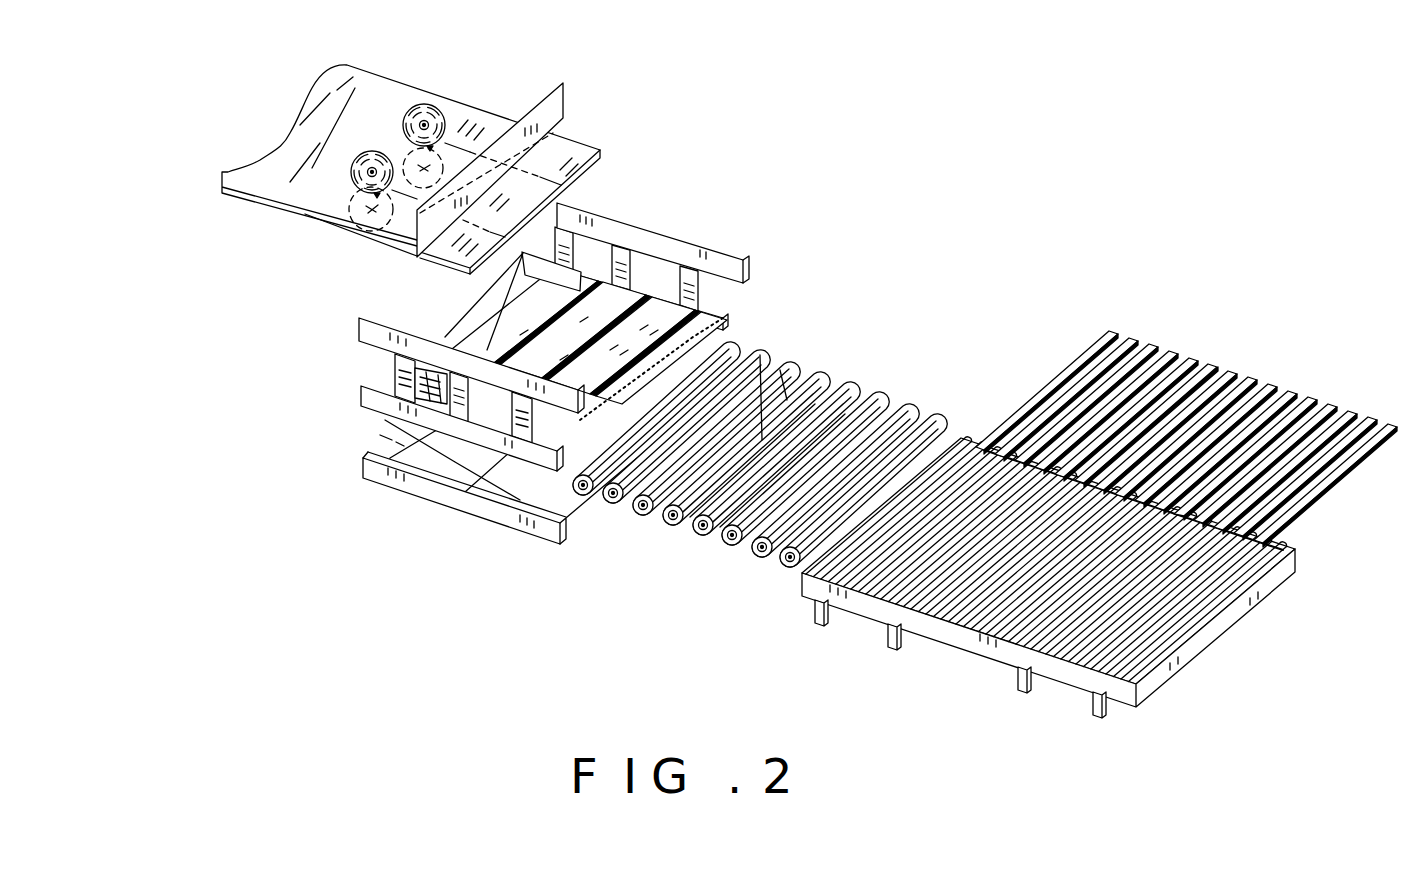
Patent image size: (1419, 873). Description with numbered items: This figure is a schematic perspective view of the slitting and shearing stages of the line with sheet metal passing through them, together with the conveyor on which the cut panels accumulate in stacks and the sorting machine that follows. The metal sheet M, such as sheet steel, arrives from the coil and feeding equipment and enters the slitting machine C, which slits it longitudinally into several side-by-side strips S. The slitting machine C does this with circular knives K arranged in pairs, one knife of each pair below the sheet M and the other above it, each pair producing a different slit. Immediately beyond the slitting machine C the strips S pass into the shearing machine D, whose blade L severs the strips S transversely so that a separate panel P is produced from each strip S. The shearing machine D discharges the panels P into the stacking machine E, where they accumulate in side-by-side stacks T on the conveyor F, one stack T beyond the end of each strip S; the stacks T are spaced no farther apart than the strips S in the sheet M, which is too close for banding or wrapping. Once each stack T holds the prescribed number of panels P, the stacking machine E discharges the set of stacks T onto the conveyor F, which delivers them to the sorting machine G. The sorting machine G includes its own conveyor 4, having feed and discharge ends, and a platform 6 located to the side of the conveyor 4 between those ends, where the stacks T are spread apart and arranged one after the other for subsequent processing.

The metal sheet M is at (365, 97).
The circular knives K is at (417, 150).
The blade L is at (568, 90).
The strips S is at (533, 193).
The slitting machine C is at (340, 213).
The shearing machine D is at (422, 237).
The panel P is at (558, 282).
The stacks T is at (693, 510).
The stacking machine E is at (448, 524).
The conveyor F is at (760, 410).
The sorting machine G is at (1099, 512).
The conveyor 4 is at (1010, 490).
The platform 6 is at (1158, 351).